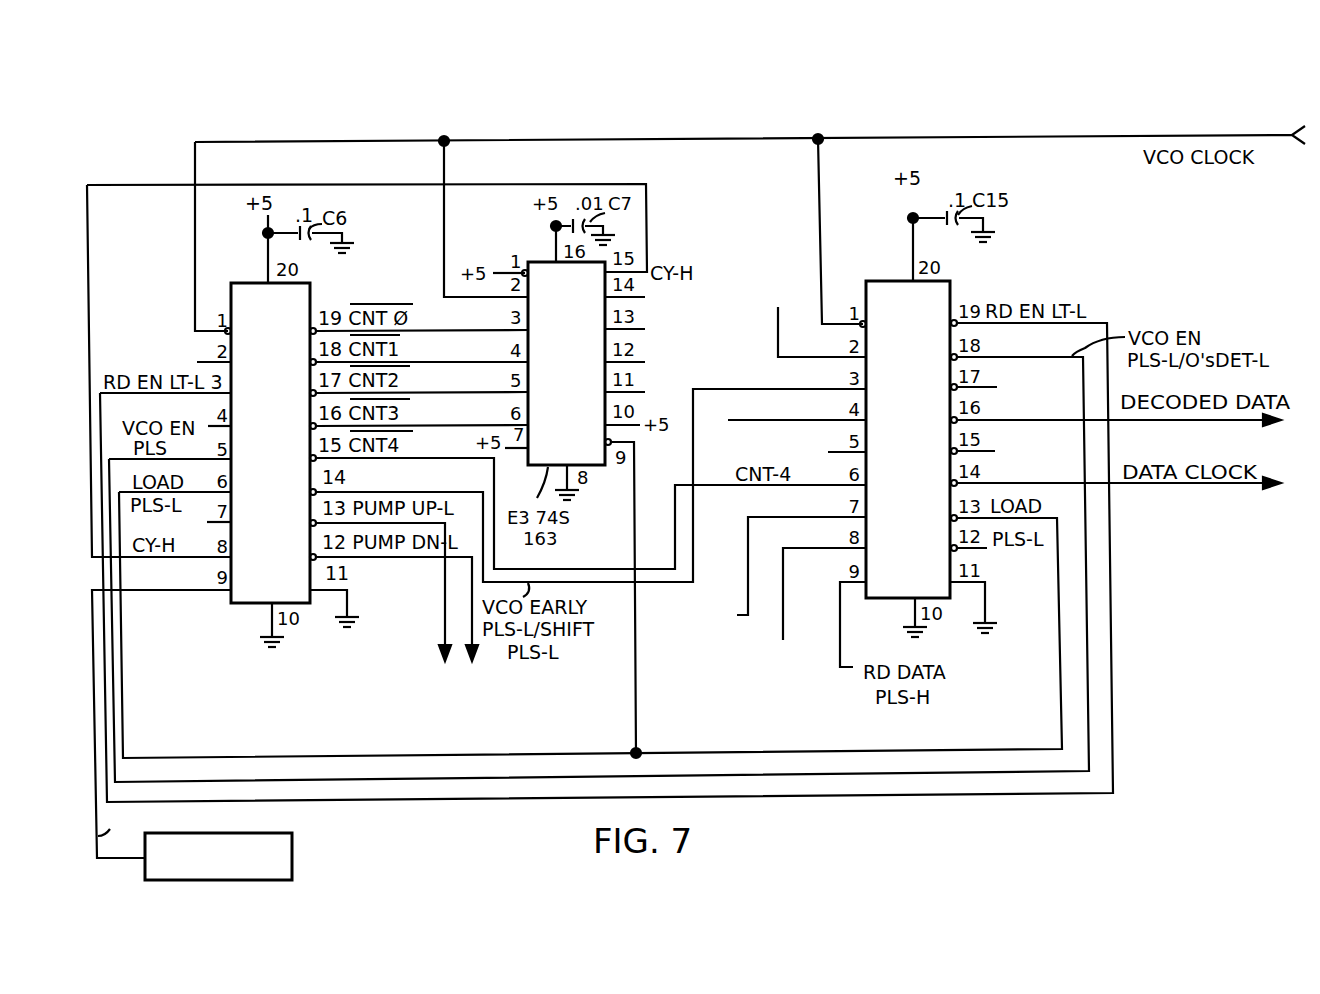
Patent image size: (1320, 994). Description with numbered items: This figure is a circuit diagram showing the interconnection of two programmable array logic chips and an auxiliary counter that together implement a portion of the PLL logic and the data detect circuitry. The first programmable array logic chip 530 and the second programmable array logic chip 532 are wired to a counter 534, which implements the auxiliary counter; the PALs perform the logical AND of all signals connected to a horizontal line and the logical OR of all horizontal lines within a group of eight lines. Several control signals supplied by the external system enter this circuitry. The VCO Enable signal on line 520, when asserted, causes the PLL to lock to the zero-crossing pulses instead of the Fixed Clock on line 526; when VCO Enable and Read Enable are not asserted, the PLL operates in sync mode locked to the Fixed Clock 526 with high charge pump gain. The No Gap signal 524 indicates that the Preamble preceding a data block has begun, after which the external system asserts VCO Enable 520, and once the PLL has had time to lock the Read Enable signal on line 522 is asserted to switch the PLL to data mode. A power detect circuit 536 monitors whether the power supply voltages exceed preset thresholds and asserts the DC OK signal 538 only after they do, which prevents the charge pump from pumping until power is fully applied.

The VCO Enable line 520 is at (776, 339).
The Read Enable line 522 is at (747, 558).
The No Gap signal 524 is at (786, 424).
The Fixed Clock line 526 is at (783, 628).
The programmable array logic chip 530 is at (246, 283).
The programmable array logic chip 532 is at (876, 292).
The counter 534 is at (555, 345).
The power detect circuit 536 is at (292, 851).
The DC OK signal 538 is at (122, 862).